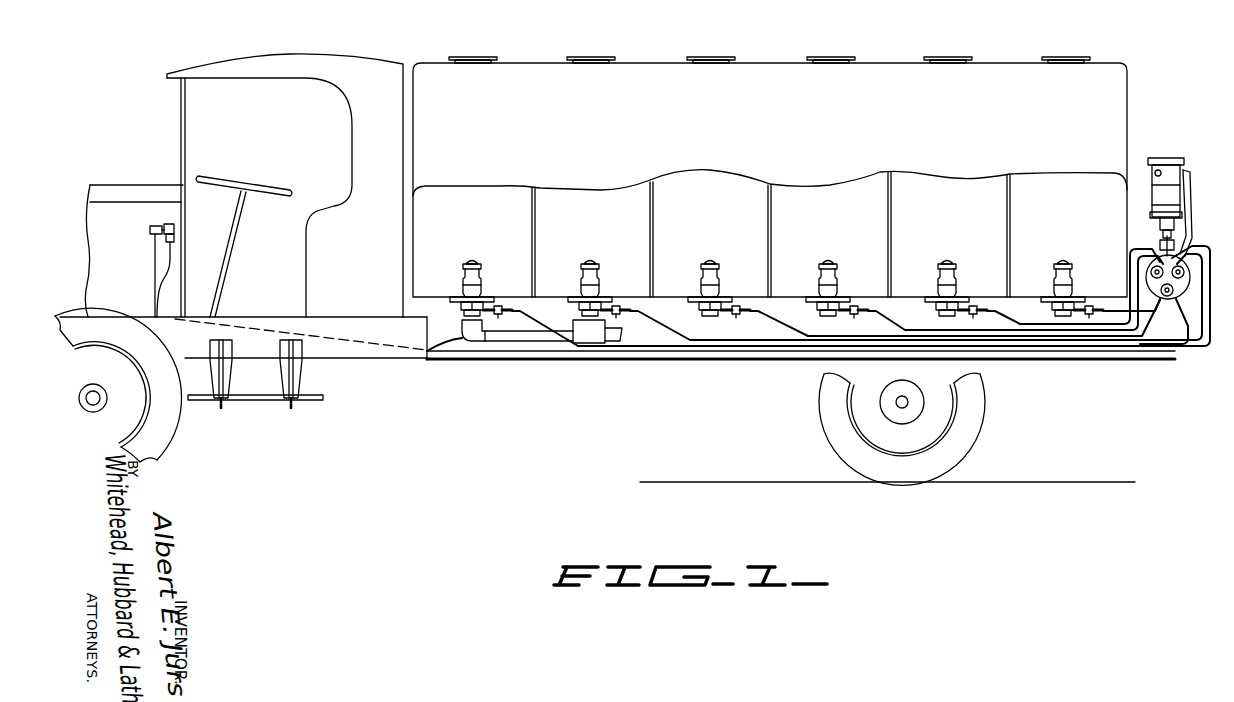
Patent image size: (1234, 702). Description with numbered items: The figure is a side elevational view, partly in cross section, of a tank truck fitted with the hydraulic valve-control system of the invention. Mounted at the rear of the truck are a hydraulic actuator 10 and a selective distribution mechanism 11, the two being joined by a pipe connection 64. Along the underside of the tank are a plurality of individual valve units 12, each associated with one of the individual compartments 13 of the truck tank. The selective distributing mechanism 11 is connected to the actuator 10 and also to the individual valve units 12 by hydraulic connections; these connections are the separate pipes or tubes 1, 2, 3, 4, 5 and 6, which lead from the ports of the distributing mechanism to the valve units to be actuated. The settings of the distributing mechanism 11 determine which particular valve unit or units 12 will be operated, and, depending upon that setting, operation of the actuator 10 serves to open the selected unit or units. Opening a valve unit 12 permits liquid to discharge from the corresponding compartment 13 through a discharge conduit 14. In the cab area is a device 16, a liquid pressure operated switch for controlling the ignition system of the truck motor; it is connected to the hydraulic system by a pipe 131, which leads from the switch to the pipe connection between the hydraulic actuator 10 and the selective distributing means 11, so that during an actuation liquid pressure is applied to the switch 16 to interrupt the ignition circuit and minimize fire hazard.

The pipe 1 is at (651, 350).
The pipe 2 is at (718, 343).
The pipe 3 is at (810, 339).
The pipe 4 is at (1012, 332).
The pipe 5 is at (1108, 326).
The pipe 6 is at (1132, 265).
The hydraulic actuator 10 is at (1182, 172).
The selective distribution mechanism 11 is at (1180, 258).
The valve unit 12 is at (484, 286).
The compartment 13 is at (482, 244).
The discharge conduit 14 is at (512, 345).
The pressure operated switch 16 is at (176, 250).
The pipe connection 64 is at (1193, 205).
The pipe 131 is at (584, 350).